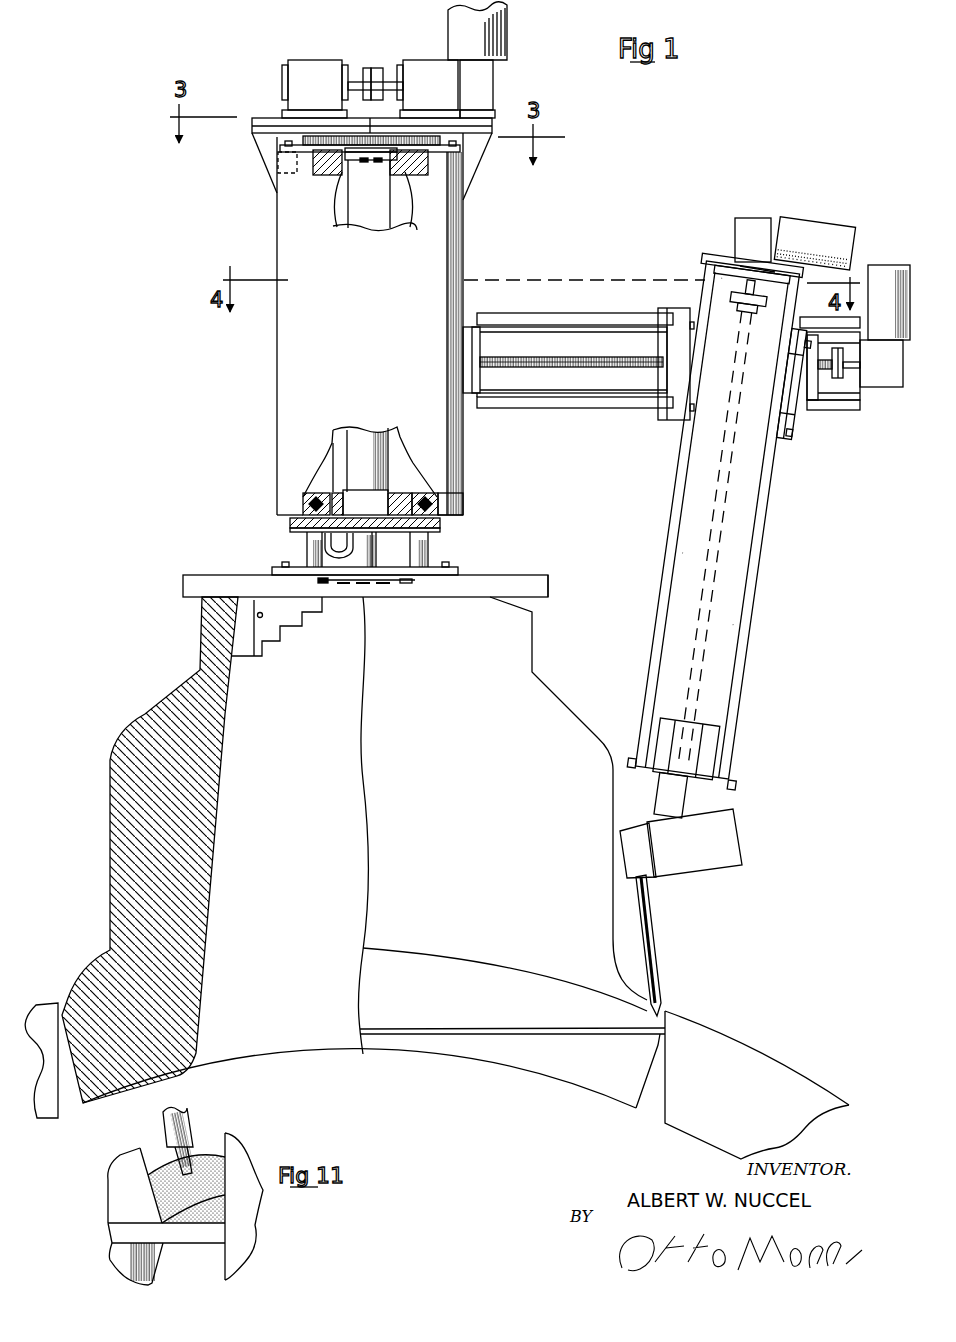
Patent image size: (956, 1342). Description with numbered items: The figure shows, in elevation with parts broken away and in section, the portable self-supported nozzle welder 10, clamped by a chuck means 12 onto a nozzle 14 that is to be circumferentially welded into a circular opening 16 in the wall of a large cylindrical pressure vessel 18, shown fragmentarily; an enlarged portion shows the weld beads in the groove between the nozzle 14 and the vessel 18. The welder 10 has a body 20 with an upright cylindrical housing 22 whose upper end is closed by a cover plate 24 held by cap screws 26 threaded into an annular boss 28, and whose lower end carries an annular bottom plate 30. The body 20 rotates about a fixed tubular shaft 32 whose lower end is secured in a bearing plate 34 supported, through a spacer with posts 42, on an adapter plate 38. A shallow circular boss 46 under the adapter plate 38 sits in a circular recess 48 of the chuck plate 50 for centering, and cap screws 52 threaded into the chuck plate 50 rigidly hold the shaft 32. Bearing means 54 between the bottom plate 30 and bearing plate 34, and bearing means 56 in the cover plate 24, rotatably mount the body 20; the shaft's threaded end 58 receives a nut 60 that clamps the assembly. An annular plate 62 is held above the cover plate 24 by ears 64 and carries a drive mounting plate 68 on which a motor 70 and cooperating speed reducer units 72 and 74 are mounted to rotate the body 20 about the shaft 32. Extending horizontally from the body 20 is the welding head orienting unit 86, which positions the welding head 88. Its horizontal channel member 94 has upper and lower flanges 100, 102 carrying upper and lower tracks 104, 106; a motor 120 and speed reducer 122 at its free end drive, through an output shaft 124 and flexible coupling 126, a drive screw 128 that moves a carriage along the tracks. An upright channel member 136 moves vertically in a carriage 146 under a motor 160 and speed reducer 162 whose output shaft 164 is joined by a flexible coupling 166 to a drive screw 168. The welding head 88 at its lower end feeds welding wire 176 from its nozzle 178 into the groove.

In FIG. 1, the nozzle welder 10 is at (662, 165).
In FIG. 1, the chuck means 12 is at (551, 576).
In FIG. 1, the nozzle 14 is at (556, 712).
In FIG. 11, the nozzle 14 is at (120, 1190).
In FIG. 1, the circular opening 16 is at (661, 1107).
In FIG. 11, the circular opening 16 is at (223, 1263).
In FIG. 1, the pressure vessel 18 is at (688, 1123).
In FIG. 1, the body 20 is at (210, 252).
In FIG. 1, the cylindrical housing 22 is at (277, 357).
In FIG. 1, the cover plate 24 is at (410, 200).
In FIG. 1, the cap screws 26 is at (287, 146).
In FIG. 1, the annular boss 28 is at (280, 170).
In FIG. 1, the annular bottom plate 30 is at (420, 443).
In FIG. 1, the tubular vertical shaft 32 is at (350, 207).
In FIG. 1, the bearing plate 34 is at (440, 524).
In FIG. 1, the adapter plate 38 is at (458, 572).
In FIG. 1, the posts 42 is at (305, 545).
In FIG. 1, the shallow circular boss 46 is at (407, 581).
In FIG. 1, the circular recess 48 is at (393, 586).
In FIG. 1, the chuck plate 50 is at (515, 577).
In FIG. 1, the cap screws 52 is at (282, 562).
In FIG. 1, the bearing means 54 is at (440, 510).
In FIG. 1, the bearing means 56 is at (340, 185).
In FIG. 1, the threaded upper end 58 is at (367, 160).
In FIG. 1, the nut 60 is at (377, 160).
In FIG. 1, the annular plate 62 is at (492, 126).
In FIG. 1, the ears 64 is at (478, 160).
In FIG. 1, the drive mounting plate 68 is at (493, 85).
In FIG. 1, the motor 70 is at (507, 38).
In FIG. 1, the speed reducer unit 72 is at (315, 60).
In FIG. 1, the speed reducer unit 74 is at (410, 60).
In FIG. 1, the welding head orienting unit 86 is at (638, 444).
In FIG. 1, the welding head 88 is at (654, 876).
In FIG. 1, the channel member 94 is at (588, 344).
In FIG. 1, the upper flange 100 is at (520, 316).
In FIG. 1, the lower flange 102 is at (523, 400).
In FIG. 1, the upper track 104 is at (548, 313).
In FIG. 1, the lower track 106 is at (560, 410).
In FIG. 1, the motor 120 is at (885, 264).
In FIG. 1, the speed reducer 122 is at (886, 388).
In FIG. 1, the output shaft 124 is at (849, 378).
In FIG. 1, the flexible coupling 126 is at (837, 380).
In FIG. 1, the drive screw 128 is at (595, 368).
In FIG. 1, the channel member 136 is at (0, 0).
In FIG. 1, the carriage 146 is at (682, 421).
In FIG. 1, the motor 160 is at (814, 243).
In FIG. 1, the speed reducer 162 is at (762, 218).
In FIG. 1, the output shaft 164 is at (760, 282).
In FIG. 1, the flexible coupling 166 is at (749, 296).
In FIG. 1, the drive screw 168 is at (715, 539).
In FIG. 11, the welding wire 176 is at (172, 1170).
In FIG. 1, the nozzle 178 is at (663, 997).
In FIG. 11, the nozzle 178 is at (193, 1133).